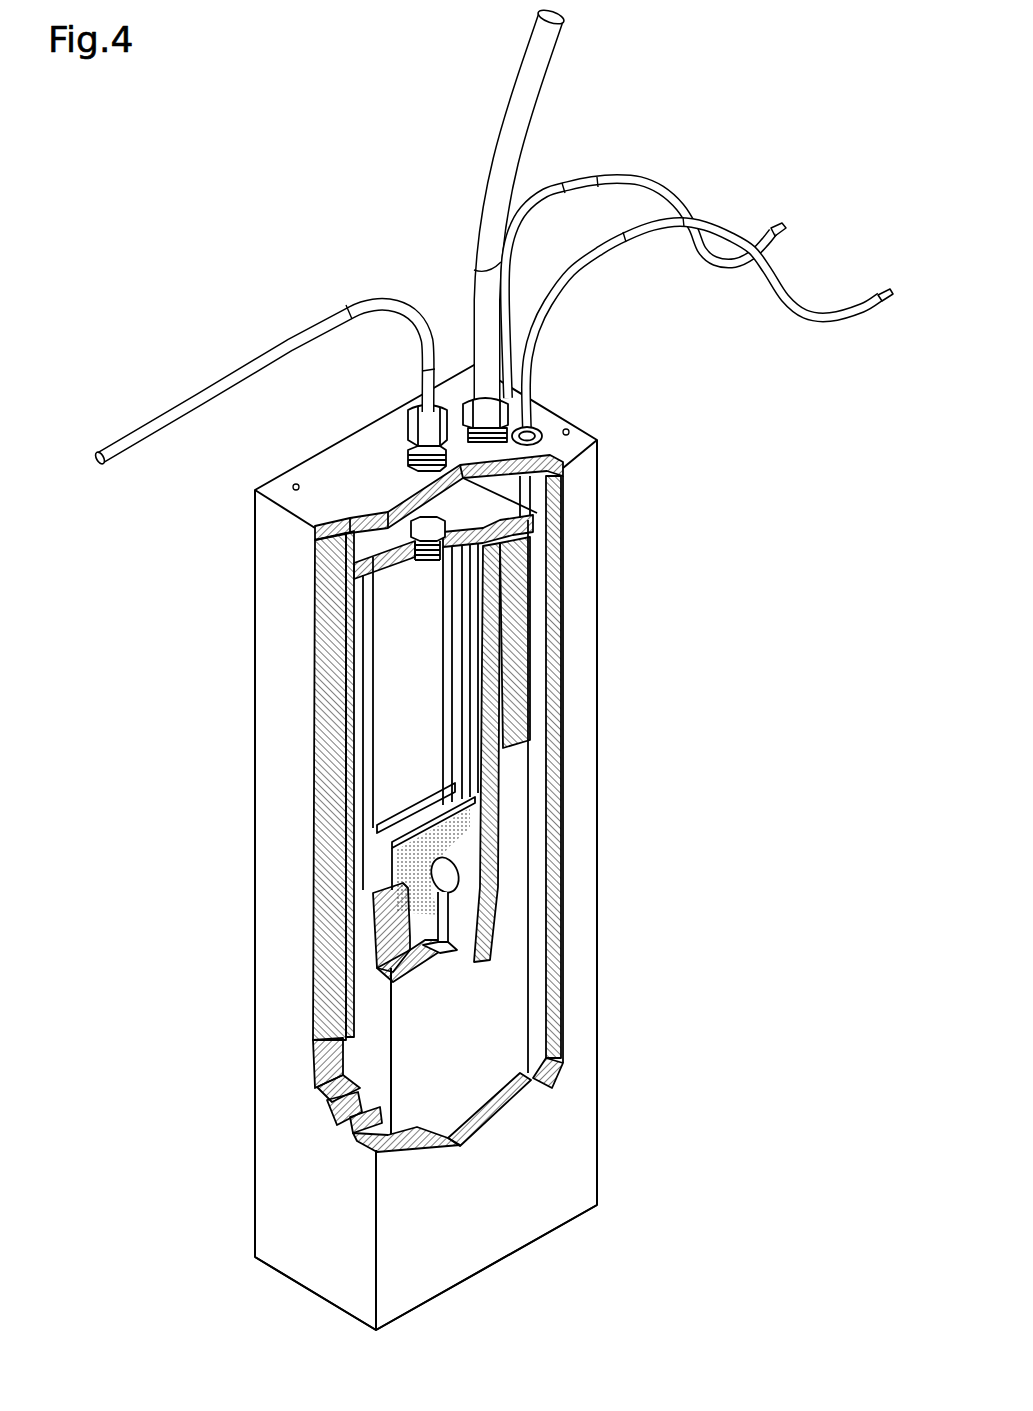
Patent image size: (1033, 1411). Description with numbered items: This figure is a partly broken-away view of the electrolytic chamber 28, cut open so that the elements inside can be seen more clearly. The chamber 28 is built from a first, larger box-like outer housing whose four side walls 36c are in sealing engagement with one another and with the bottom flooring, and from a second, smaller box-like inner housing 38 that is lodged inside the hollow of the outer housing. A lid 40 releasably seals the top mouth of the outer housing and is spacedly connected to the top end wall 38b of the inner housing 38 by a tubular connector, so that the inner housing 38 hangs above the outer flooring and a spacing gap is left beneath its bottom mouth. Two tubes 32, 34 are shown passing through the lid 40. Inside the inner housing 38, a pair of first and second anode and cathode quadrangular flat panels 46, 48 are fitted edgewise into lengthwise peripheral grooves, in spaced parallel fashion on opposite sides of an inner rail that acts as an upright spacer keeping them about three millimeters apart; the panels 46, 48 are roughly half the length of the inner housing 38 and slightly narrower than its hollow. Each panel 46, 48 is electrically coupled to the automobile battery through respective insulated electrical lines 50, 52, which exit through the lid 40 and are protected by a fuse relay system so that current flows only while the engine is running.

The electrolytic chamber 28 is at (630, 1098).
The tube 32 is at (515, 106).
The tube 34 is at (186, 411).
The side walls 36c is at (410, 1247).
The second smaller box-like housing 38 is at (418, 1064).
The top end wall 38b is at (488, 516).
The lid 40 is at (313, 482).
The first anode and cathode quadrangular flat panel 46 is at (383, 847).
The second anode and cathode quadrangular flat panel 48 is at (457, 907).
The insulated electrical line 50 is at (593, 185).
The insulated electrical line 52 is at (610, 242).